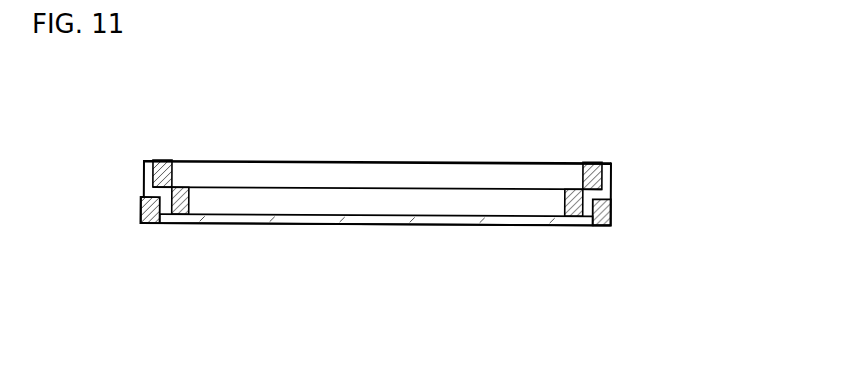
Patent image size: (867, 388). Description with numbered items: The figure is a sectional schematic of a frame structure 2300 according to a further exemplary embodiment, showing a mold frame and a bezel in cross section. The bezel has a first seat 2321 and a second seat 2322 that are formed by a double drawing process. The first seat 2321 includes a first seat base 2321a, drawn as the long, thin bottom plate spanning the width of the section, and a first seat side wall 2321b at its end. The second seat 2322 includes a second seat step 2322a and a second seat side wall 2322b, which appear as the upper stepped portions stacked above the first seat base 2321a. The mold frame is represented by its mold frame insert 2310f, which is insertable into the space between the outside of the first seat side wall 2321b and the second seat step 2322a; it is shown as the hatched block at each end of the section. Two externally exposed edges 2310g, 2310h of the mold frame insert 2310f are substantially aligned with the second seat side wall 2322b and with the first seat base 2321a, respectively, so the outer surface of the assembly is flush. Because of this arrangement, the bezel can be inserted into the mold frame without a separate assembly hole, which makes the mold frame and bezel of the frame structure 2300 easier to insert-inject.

The frame structure 2300 is at (643, 127).
The mold frame insert 2310f is at (140, 211).
The externally exposed edge 2310g is at (612, 228).
The externally exposed edge 2310h is at (600, 227).
The first seat 2321 is at (372, 253).
The first seat base 2321a is at (254, 224).
The first seat side wall 2321b is at (372, 233).
The second seat 2322 is at (459, 192).
The second seat step 2322a is at (605, 203).
The second seat side wall 2322b is at (612, 172).